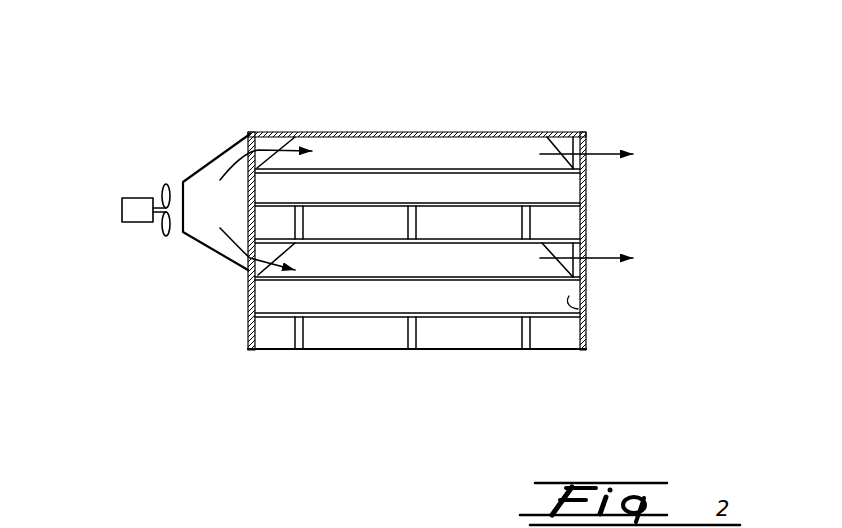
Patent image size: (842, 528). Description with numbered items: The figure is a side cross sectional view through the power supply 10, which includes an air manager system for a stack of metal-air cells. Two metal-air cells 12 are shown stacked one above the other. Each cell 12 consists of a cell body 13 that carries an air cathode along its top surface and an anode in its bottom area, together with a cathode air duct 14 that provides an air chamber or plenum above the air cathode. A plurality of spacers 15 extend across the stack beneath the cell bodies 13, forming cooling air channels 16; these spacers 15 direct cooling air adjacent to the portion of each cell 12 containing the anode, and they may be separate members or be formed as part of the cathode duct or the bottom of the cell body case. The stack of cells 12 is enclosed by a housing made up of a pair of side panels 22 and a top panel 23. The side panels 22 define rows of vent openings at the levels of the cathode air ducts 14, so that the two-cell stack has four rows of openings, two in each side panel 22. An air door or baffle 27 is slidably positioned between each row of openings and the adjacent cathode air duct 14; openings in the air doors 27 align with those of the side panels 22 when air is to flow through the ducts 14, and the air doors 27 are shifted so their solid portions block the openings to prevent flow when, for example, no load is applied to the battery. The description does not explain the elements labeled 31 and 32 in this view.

The power supply 10 is at (148, 280).
The metal-air cells 12 is at (566, 177).
The cell body 13 is at (572, 187).
The cathode air duct 14 is at (475, 132).
The spacers 15 is at (417, 333).
The cooling air channels 16 is at (355, 333).
The side panels 22 is at (248, 134).
The top panel 23 is at (431, 132).
The air door 27 is at (277, 133).
The inlet funnel 31 is at (213, 250).
The fan motor 32 is at (130, 197).